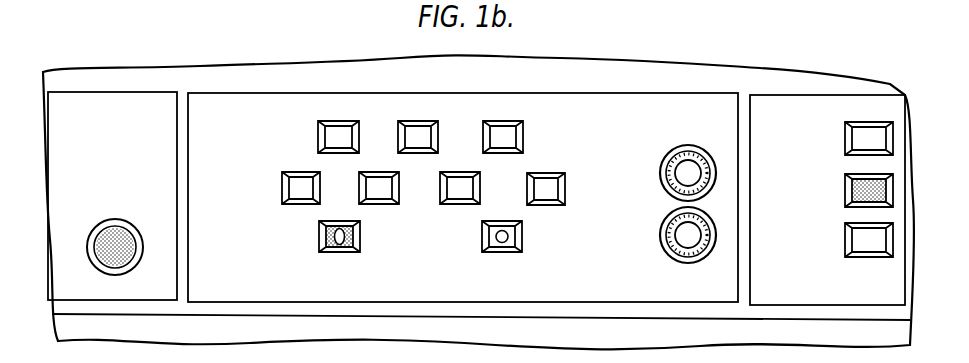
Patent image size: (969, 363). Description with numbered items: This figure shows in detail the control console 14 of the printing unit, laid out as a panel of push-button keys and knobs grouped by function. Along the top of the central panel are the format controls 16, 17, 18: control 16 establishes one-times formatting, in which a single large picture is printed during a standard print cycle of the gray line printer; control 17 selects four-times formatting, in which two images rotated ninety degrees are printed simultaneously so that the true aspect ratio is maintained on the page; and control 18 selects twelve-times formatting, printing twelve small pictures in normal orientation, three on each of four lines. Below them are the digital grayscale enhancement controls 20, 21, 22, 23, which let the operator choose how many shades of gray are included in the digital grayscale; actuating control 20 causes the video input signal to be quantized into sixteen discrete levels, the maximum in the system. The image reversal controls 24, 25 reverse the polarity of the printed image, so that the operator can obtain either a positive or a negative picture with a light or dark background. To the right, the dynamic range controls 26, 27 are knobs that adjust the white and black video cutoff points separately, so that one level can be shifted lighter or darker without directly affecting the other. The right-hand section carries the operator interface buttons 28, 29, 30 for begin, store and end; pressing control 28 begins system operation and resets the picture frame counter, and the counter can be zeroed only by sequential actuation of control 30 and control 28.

The control console 14 is at (776, 58).
The format control 16 is at (330, 120).
The format control 17 is at (409, 120).
The format control 18 is at (489, 120).
The digital grayscale enhancement control 20 is at (293, 172).
The digital grayscale enhancement control 21 is at (372, 204).
The digital grayscale enhancement control 22 is at (460, 206).
The digital grayscale enhancement control 23 is at (533, 206).
The image reversal control 24 is at (330, 253).
The image reversal control 25 is at (481, 246).
The dynamic range control 26 is at (663, 187).
The dynamic range control 27 is at (664, 252).
The operator control 28 is at (845, 130).
The operator control 29 is at (845, 186).
The operator control 30 is at (845, 233).